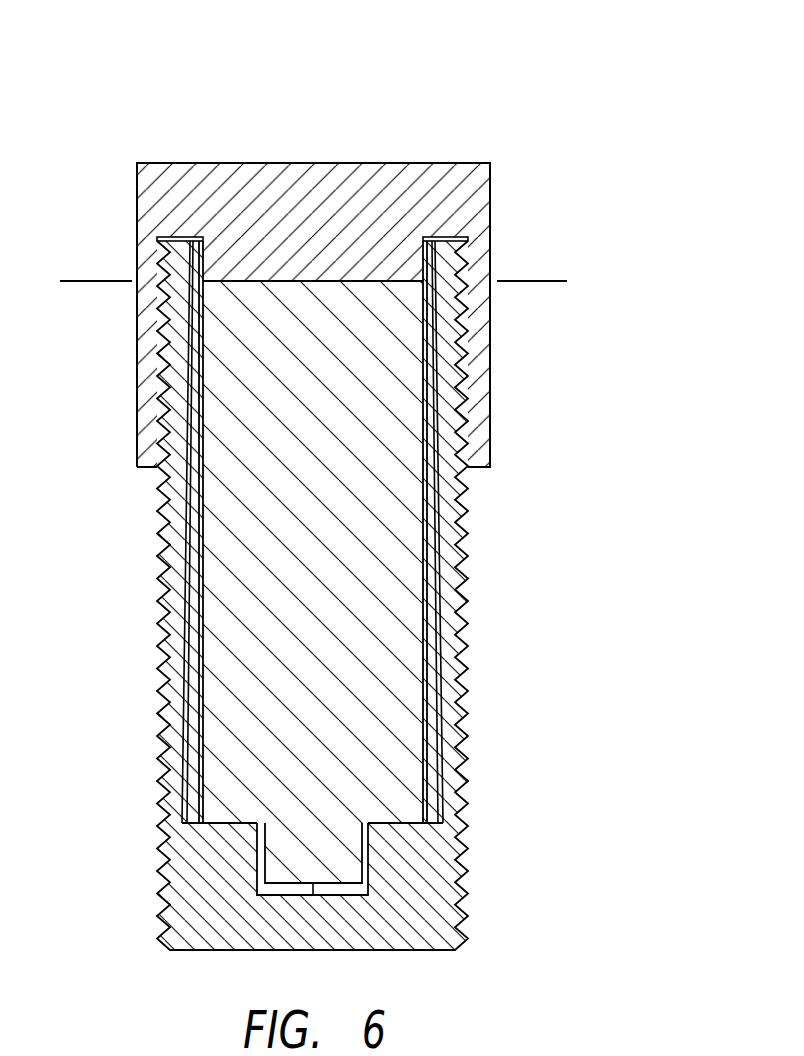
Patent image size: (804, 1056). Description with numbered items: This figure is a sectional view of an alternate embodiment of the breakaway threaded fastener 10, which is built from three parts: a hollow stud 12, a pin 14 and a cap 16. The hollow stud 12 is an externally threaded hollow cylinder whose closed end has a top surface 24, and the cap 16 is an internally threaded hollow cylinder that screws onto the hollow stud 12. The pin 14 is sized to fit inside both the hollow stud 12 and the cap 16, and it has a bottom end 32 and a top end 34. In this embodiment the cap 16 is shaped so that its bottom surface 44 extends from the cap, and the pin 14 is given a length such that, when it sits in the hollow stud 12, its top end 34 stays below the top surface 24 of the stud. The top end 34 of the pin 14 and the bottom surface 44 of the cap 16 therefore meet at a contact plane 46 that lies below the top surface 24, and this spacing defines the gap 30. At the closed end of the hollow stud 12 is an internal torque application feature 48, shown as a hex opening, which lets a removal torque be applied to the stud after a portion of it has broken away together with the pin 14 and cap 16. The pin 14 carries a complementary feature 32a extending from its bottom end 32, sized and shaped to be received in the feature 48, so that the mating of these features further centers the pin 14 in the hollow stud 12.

The breakaway threaded fastener 10 is at (311, 492).
The hollow stud 12 is at (140, 687).
The pin 14 is at (226, 586).
The cap 16 is at (228, 158).
The top surface 24 is at (448, 237).
The gap 30 is at (467, 241).
The bottom end 32 is at (218, 825).
The complementary feature 32a is at (293, 855).
The top end 34 is at (253, 282).
The bottom surface 44 is at (288, 280).
The contact plane 46 is at (80, 278).
The internal torque application feature 48 is at (367, 880).